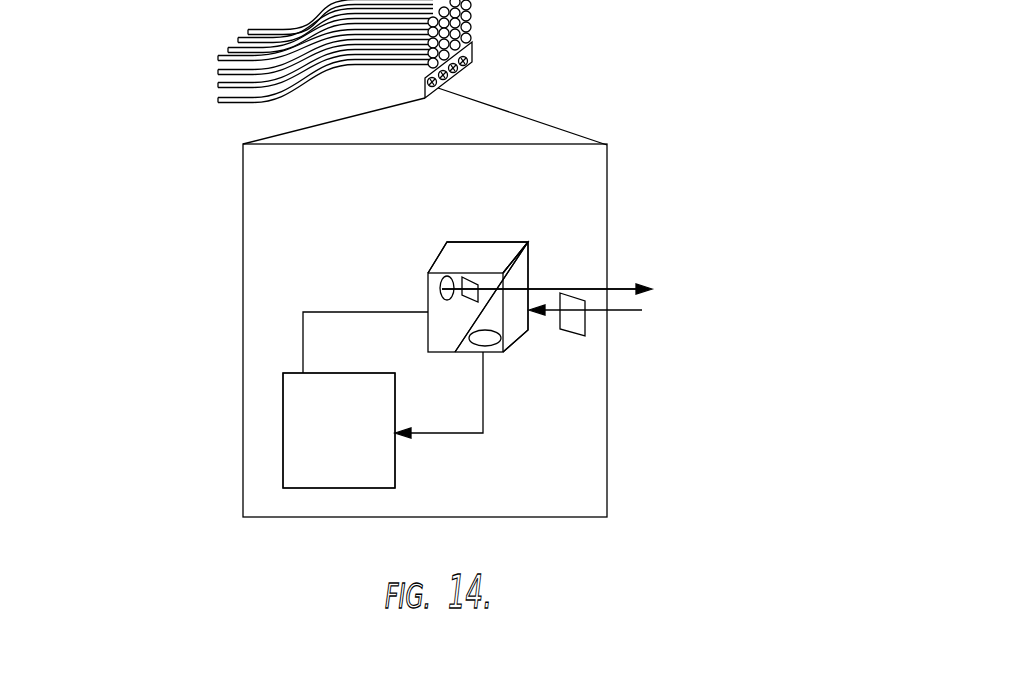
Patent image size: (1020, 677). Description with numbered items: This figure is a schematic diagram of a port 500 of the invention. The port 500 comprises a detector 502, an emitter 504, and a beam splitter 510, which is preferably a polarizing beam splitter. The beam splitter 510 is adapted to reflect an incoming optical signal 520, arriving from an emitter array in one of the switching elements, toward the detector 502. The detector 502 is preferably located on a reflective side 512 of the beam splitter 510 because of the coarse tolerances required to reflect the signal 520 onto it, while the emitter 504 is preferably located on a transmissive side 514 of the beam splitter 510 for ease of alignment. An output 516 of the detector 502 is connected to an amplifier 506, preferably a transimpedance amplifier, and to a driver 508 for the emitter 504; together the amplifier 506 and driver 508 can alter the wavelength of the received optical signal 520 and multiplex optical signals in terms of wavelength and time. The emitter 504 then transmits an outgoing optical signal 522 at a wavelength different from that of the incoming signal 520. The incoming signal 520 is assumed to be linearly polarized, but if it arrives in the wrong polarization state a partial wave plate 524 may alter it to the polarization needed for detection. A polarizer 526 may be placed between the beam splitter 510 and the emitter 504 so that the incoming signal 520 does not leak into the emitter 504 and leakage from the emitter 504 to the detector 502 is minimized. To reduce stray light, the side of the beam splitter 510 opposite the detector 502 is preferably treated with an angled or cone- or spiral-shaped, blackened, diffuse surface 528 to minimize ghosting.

The port 500 is at (612, 197).
The detector 502 is at (500, 352).
The emitter 504 is at (443, 290).
The amplifier 506 is at (358, 418).
The driver 508 is at (358, 468).
The beam splitter 510 is at (498, 278).
The reflective side 512 is at (505, 279).
The transmissive side 514 is at (488, 282).
The output 516 is at (462, 433).
The optical signal 520 is at (630, 311).
The optical signal 522 is at (620, 286).
The partial wave plate 524 is at (585, 333).
The polarizer 526 is at (462, 282).
The diffuse surface 528 is at (530, 286).